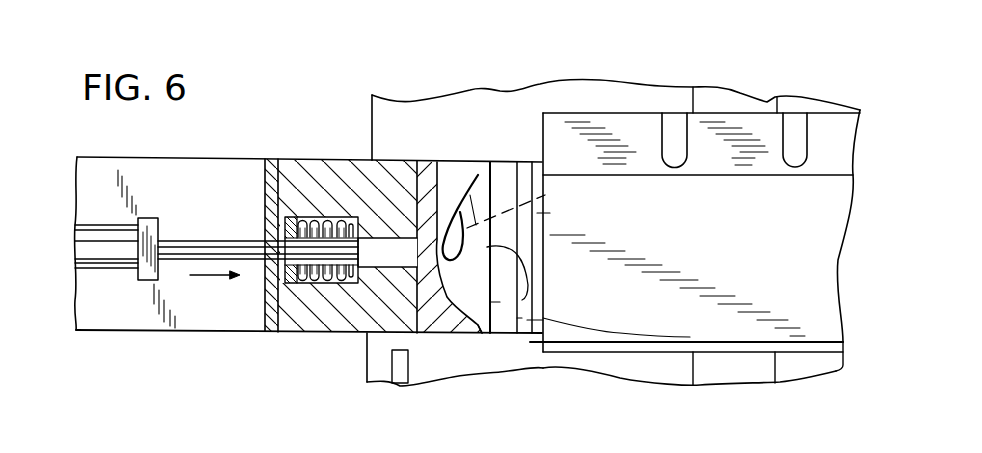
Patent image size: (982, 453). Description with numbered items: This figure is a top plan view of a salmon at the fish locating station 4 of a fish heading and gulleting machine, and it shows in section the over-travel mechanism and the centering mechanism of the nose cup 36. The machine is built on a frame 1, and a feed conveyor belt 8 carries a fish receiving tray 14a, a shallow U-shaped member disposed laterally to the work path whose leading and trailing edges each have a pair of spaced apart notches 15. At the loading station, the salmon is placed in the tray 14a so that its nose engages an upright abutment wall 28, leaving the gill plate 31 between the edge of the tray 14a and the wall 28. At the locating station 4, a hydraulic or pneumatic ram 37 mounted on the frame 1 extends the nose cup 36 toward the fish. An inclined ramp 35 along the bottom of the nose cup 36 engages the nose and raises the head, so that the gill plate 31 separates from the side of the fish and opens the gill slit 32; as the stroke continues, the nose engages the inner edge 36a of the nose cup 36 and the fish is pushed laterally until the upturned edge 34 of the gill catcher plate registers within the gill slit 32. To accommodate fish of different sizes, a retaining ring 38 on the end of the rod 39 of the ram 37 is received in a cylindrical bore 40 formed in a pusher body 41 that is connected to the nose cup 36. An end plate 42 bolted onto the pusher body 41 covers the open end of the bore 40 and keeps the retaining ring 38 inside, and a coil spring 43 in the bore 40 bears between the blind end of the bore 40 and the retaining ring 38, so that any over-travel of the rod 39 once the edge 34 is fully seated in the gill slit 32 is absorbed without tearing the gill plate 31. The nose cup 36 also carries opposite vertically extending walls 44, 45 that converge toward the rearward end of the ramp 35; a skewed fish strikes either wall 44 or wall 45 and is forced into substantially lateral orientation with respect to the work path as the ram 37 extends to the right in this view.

The frame 1 is at (562, 90).
The fish locating station 4 is at (378, 66).
The feed conveyor belt 8 is at (713, 98).
The fish receiving tray 14a is at (813, 320).
The notches 15 is at (665, 123).
The abutment wall 28 is at (391, 377).
The gill plate 31 is at (505, 290).
The gill slit 32 is at (530, 300).
The upturned edge 34 is at (508, 175).
The inclined ramp 35 is at (479, 200).
The nose cup 36 is at (437, 334).
The inner edge 36a is at (437, 242).
The ram 37 is at (110, 268).
The retaining ring 38 is at (283, 230).
The rod 39 is at (175, 240).
The cylindrical bore 40 is at (285, 273).
The pusher body 41 is at (327, 160).
The end plate 42 is at (273, 160).
The coil spring 43 is at (316, 284).
The vertically extending wall 44 is at (470, 190).
The vertically extending wall 45 is at (480, 317).